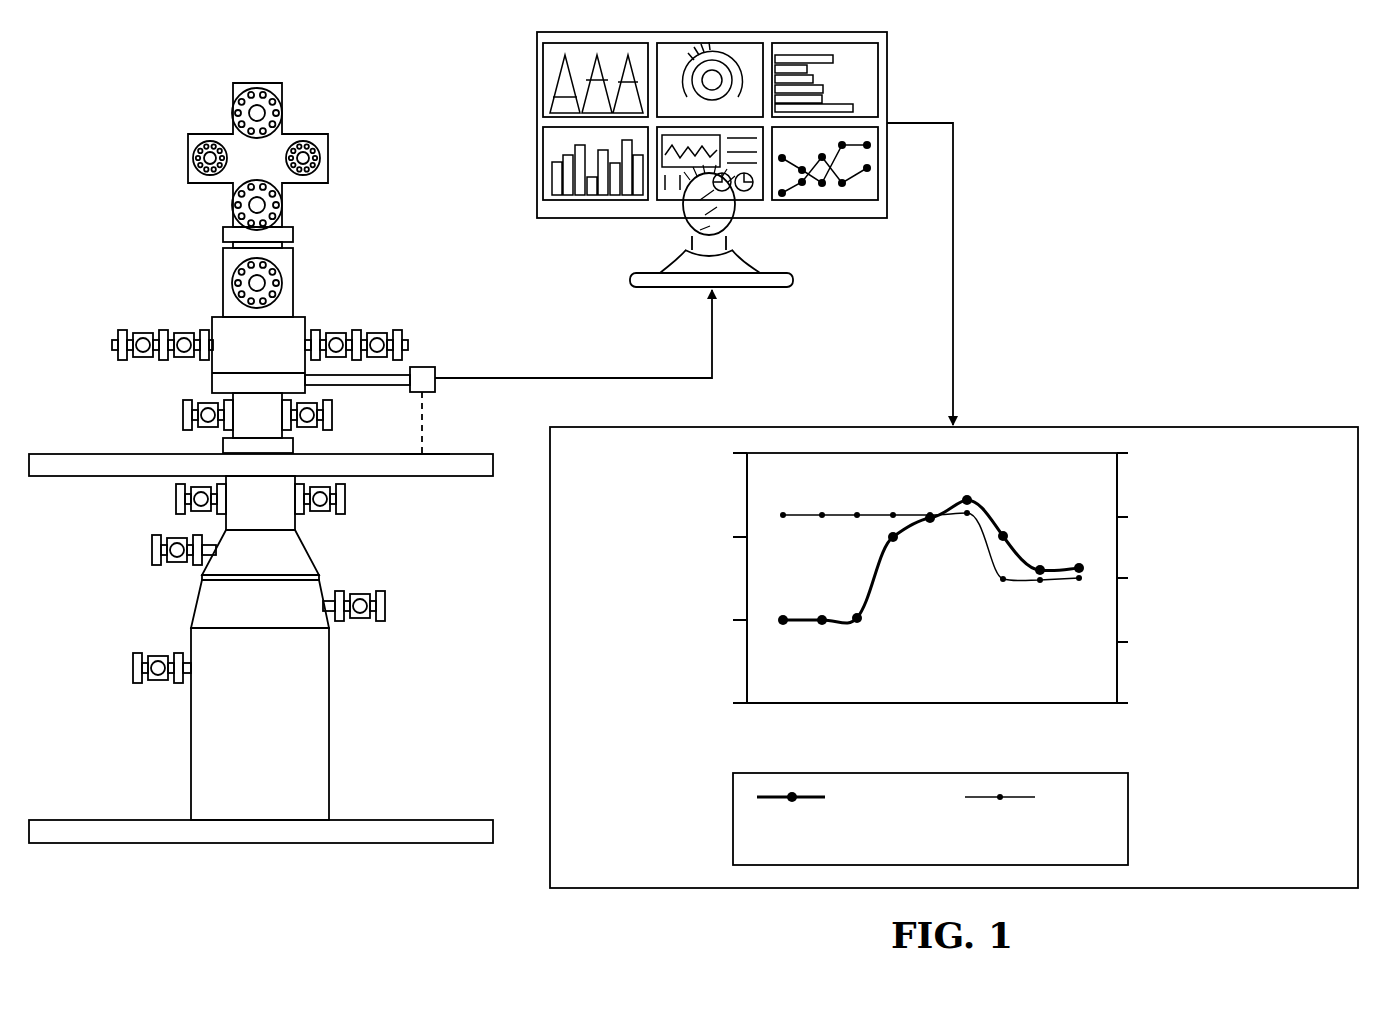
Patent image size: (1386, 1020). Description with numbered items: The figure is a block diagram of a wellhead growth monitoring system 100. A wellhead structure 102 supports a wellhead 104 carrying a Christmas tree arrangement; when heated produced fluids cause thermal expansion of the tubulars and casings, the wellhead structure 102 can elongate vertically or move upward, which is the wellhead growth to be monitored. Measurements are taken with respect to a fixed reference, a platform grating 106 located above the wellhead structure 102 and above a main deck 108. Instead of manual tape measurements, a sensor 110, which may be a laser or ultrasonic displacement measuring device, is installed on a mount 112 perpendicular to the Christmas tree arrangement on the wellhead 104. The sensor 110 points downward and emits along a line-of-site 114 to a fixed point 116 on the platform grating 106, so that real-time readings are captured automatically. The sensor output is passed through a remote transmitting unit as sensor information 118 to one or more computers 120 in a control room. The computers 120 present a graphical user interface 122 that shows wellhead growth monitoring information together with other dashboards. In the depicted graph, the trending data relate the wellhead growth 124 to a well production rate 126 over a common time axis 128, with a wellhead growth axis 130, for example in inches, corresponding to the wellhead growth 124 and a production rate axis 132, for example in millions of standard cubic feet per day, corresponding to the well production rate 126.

The wellhead growth monitoring system 100 is at (1175, 122).
The wellhead structure 102 is at (81, 530).
The wellhead 104 is at (81, 102).
The platform (PF) grating 106 is at (455, 478).
The main deck 108 is at (459, 820).
The sensor 110 is at (423, 367).
The mount 112 is at (358, 385).
The line-of-site 114 is at (424, 423).
The fixed point 116 is at (434, 447).
The sensor information 118 is at (570, 378).
The computers 120 is at (890, 77).
The graphical user interface (GUI) 122 is at (553, 70).
The wellhead growth 124 is at (873, 597).
The well production rate 126 is at (1018, 583).
The common time axis 128 is at (1012, 705).
The wellhead growth axis 130 is at (743, 657).
The production rate axis 132 is at (1120, 660).